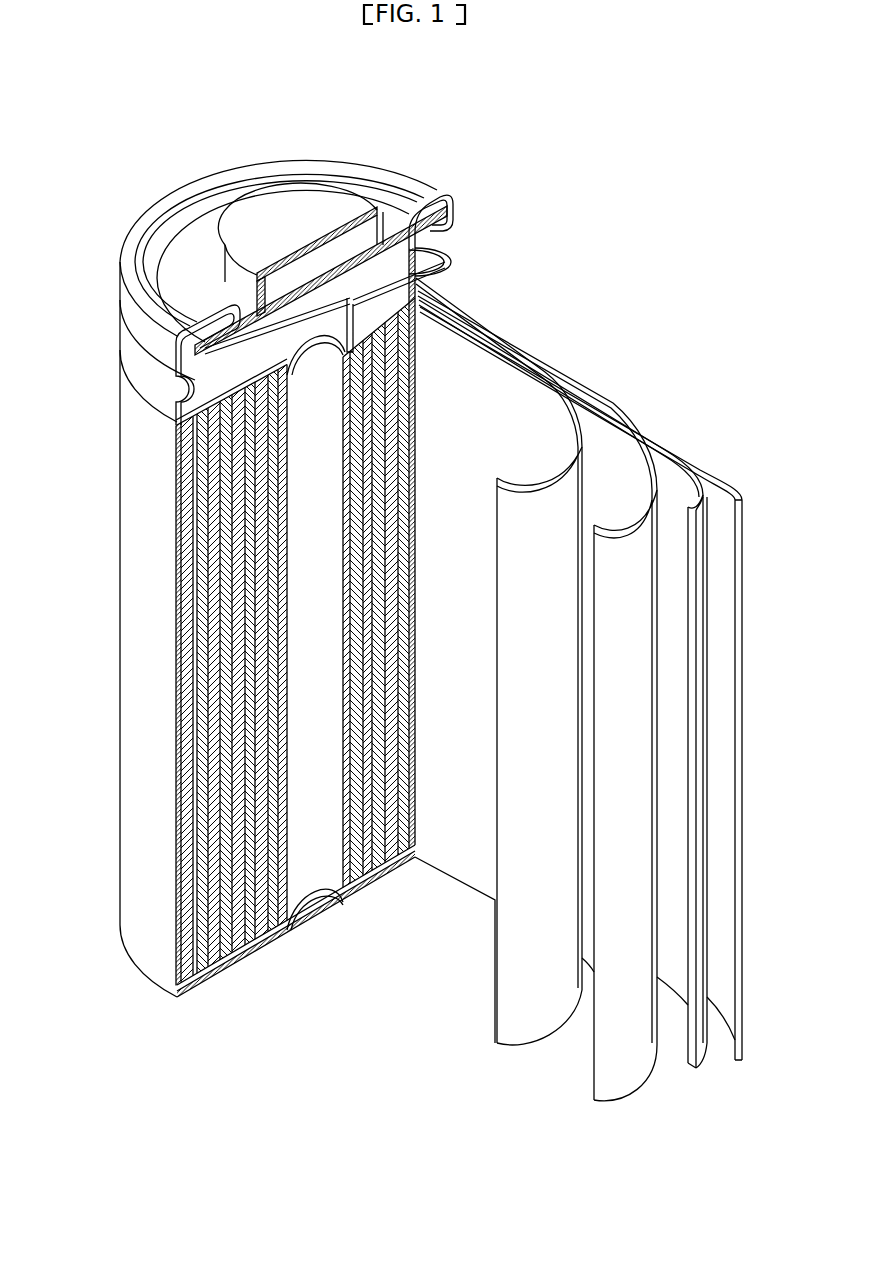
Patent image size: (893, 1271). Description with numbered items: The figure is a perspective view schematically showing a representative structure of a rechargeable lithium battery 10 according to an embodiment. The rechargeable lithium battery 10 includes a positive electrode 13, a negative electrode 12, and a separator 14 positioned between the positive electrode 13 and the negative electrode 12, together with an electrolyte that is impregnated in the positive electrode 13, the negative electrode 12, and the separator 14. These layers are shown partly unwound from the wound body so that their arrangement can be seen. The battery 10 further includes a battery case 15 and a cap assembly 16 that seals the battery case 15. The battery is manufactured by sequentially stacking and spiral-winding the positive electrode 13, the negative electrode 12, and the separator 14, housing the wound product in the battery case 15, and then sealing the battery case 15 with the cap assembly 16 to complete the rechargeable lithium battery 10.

The rechargeable lithium battery 10 is at (452, 140).
The negative electrode 12 is at (707, 437).
The positive electrode 13 is at (597, 400).
The separator 14 is at (472, 345).
The battery case 15 is at (125, 627).
The cap assembly 16 is at (273, 207).